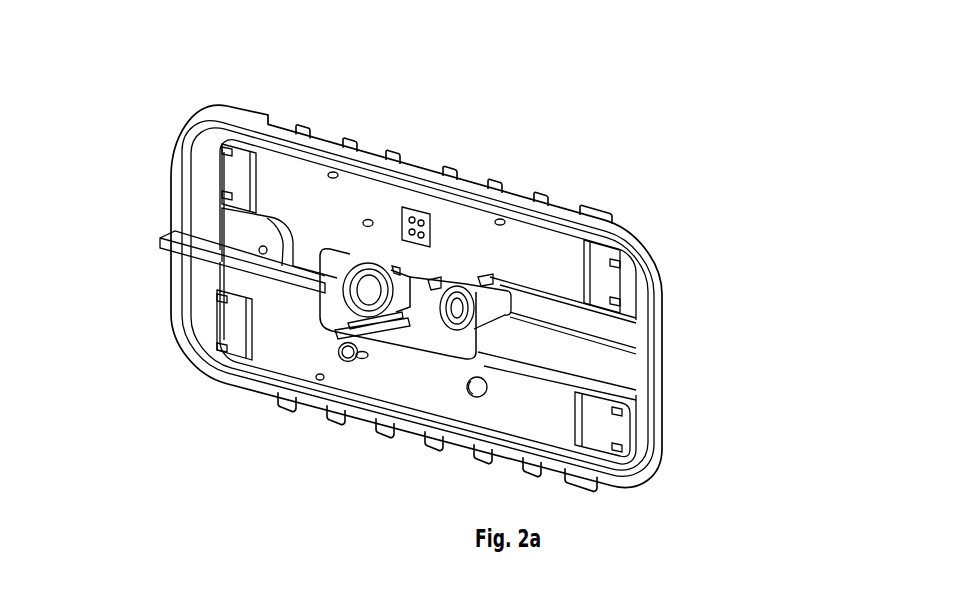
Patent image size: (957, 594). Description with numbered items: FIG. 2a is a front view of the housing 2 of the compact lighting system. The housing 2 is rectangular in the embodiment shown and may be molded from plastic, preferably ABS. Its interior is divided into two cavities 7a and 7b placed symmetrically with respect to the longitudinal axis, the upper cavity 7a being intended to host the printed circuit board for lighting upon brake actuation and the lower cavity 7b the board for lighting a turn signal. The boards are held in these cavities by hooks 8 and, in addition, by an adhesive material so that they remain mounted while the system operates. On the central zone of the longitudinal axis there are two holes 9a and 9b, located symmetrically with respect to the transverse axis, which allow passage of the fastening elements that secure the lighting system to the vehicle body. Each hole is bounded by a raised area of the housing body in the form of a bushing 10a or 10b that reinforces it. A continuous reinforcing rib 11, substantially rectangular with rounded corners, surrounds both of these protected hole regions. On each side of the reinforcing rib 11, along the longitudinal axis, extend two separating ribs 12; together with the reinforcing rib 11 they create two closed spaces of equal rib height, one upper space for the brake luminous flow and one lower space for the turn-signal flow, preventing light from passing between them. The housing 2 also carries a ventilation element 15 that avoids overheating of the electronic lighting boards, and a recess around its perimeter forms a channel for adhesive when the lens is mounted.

The housing 2 is at (657, 265).
The cavity 7a is at (518, 227).
The cavity 7b is at (298, 352).
The hooks 8 is at (223, 193).
The hole 9a is at (367, 280).
The hole 9b is at (466, 298).
The bushing 10a is at (396, 268).
The bushing 10b is at (448, 288).
The reinforcing rib 11 is at (393, 342).
The separating ribs 12 is at (621, 358).
The ventilation element 15 is at (220, 298).